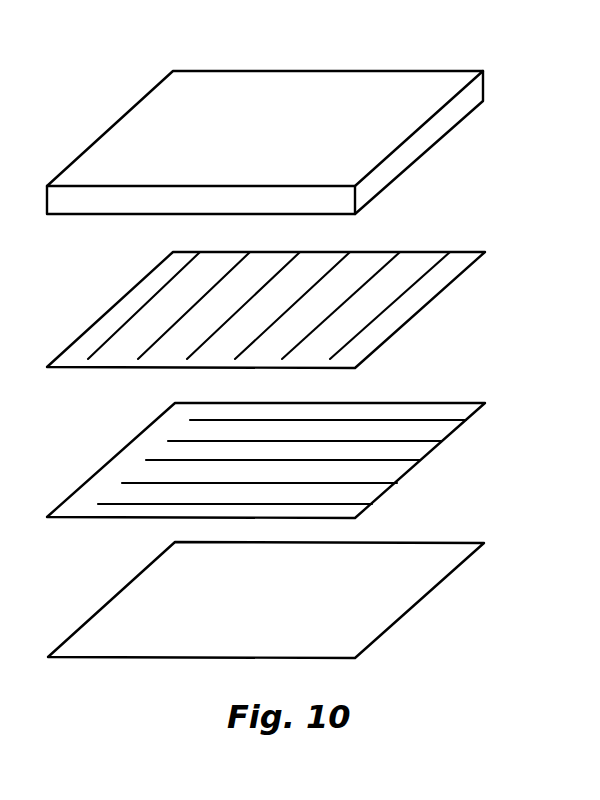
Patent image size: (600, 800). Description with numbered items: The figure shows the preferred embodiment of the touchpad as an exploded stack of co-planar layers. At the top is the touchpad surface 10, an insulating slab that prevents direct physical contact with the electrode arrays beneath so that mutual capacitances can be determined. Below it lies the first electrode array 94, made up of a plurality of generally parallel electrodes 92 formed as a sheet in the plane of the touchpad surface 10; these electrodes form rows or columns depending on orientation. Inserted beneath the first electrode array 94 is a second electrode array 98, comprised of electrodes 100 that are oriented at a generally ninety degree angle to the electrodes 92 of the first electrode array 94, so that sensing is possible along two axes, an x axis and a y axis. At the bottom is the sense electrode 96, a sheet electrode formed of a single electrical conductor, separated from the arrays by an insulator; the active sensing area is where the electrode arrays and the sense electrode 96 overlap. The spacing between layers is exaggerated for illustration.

The touchpad surface 10 is at (403, 87).
The electrodes 92 is at (332, 262).
The first electrode array 94 is at (417, 310).
The second electrode array 98 is at (427, 457).
The electrodes 100 is at (177, 441).
The sense electrode 96 is at (402, 618).